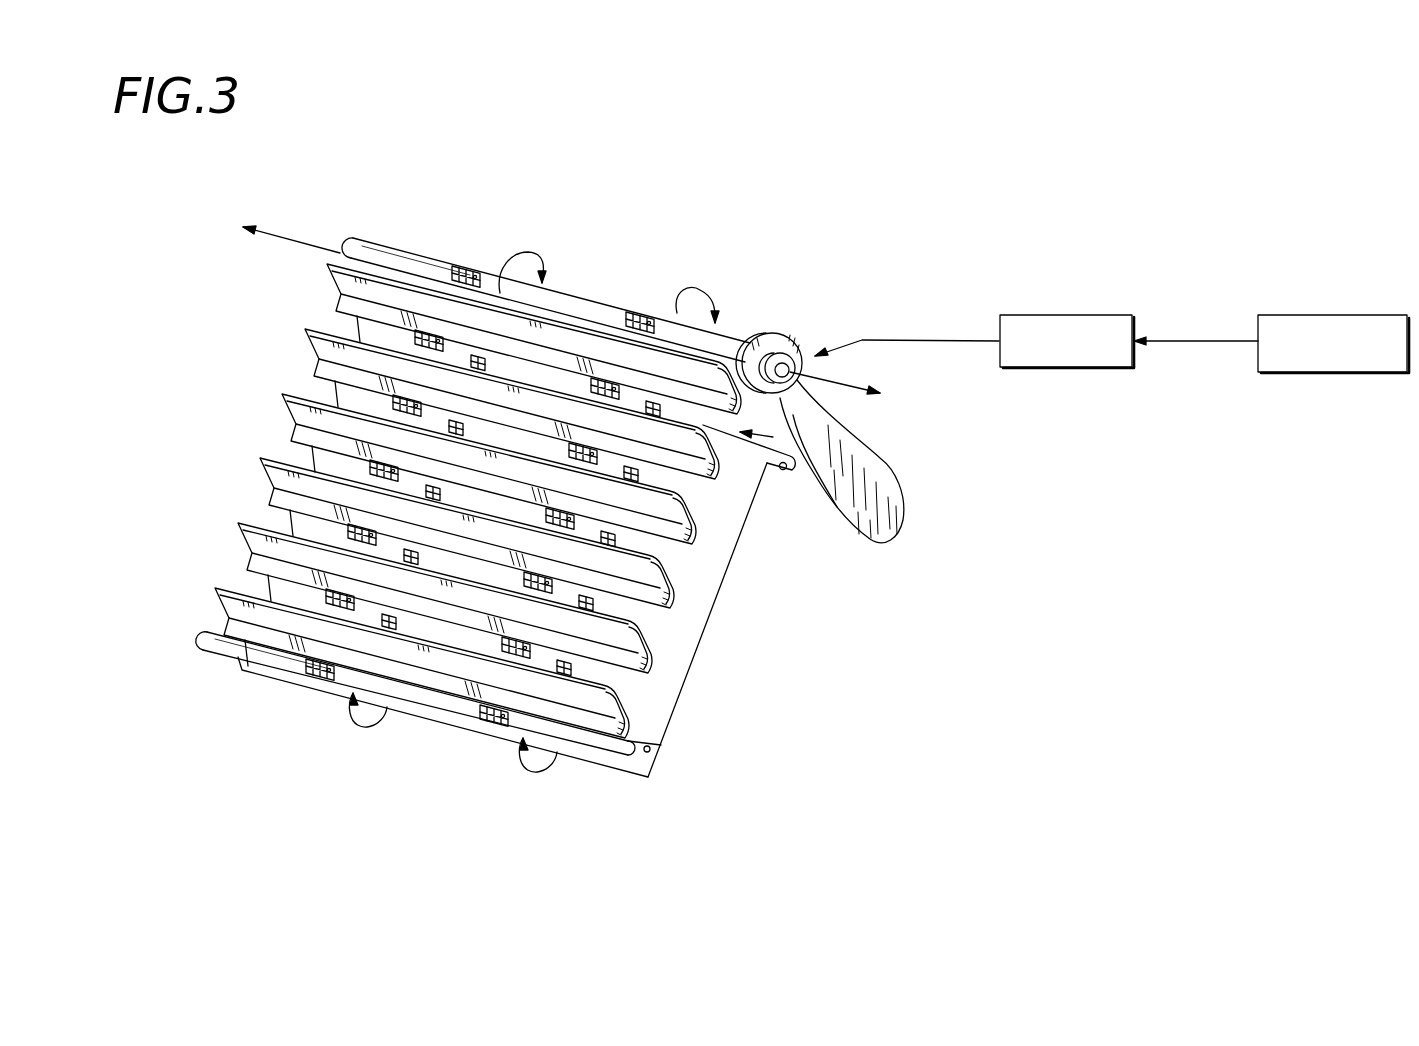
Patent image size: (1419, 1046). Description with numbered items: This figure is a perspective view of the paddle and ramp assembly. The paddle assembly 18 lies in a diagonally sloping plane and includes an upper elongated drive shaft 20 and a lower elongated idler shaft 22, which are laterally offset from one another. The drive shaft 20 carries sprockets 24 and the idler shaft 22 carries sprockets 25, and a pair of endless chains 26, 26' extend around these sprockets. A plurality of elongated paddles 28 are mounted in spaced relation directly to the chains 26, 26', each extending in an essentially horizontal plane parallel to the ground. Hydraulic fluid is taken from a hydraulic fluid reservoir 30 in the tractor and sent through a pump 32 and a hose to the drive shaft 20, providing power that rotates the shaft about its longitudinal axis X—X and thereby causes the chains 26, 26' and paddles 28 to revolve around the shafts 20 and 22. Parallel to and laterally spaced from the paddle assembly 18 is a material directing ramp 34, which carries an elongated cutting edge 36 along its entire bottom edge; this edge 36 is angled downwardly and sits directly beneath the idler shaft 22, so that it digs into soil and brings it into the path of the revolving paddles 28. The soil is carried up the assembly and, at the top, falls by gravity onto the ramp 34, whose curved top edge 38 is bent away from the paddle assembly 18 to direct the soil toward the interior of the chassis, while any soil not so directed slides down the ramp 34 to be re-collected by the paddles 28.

The paddle assembly 18 is at (877, 187).
The drive shaft 20 is at (380, 253).
The idler shaft 22 is at (630, 754).
The sprockets 24 is at (498, 292).
The sprockets 25 is at (352, 692).
The endless chain 26 is at (456, 204).
The endless chain 26' is at (639, 247).
The paddles 28 is at (305, 338).
The hydraulic fluid reservoir 30 is at (1318, 373).
The pump 32 is at (1048, 368).
The material directing ramp 34 is at (683, 653).
The cutting edge 36 is at (663, 752).
The top edge 38 is at (797, 477).